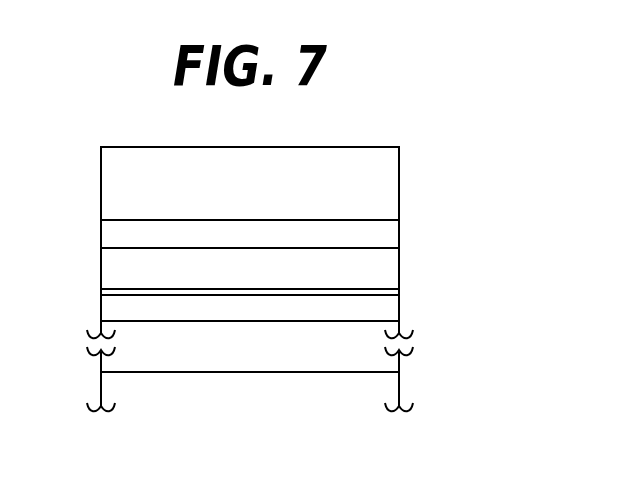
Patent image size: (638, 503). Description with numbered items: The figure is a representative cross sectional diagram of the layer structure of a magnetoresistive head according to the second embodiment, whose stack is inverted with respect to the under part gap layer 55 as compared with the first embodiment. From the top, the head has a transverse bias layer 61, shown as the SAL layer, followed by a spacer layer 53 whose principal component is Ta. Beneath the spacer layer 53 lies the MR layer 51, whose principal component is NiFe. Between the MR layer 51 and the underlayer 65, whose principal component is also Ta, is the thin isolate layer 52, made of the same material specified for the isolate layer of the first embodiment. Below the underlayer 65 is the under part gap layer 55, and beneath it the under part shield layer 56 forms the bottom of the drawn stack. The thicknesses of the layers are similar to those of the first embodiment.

The transverse bias layer 61 is at (333, 147).
The spacer layer 53 is at (388, 232).
The MR layer 51 is at (390, 267).
The isolate layer 52 is at (400, 293).
The underlayer 65 is at (392, 307).
The under part gap layer 55 is at (368, 355).
The under part shield layer 56 is at (373, 395).